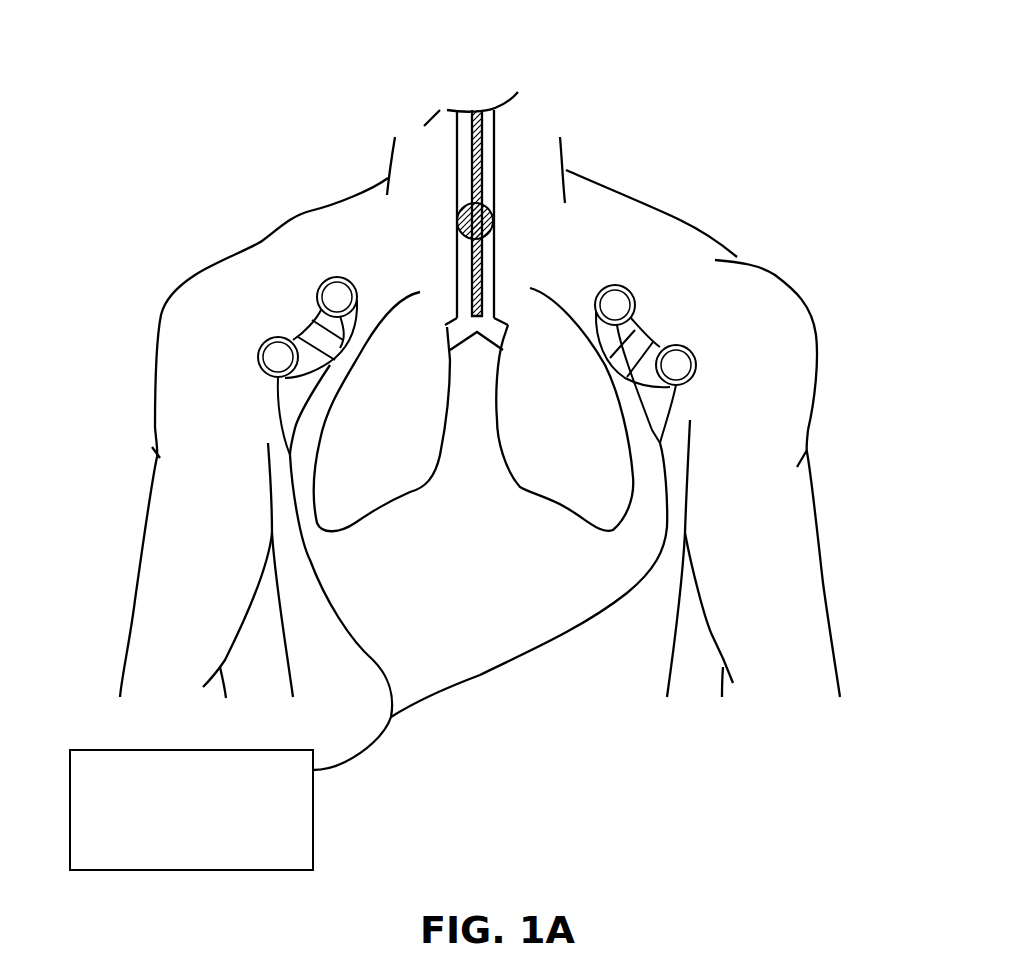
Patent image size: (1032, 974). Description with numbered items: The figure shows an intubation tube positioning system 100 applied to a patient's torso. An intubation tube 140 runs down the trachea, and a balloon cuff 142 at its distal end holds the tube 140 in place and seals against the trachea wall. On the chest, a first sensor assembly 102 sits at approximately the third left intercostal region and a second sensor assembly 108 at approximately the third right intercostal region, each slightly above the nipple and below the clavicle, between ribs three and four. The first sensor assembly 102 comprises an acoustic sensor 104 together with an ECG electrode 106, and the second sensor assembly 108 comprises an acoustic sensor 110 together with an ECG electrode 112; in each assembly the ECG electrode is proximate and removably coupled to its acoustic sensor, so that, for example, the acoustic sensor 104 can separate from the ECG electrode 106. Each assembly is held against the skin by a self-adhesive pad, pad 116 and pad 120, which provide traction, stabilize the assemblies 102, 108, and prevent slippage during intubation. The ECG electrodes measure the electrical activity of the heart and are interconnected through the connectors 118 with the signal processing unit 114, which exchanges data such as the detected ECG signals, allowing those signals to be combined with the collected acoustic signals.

The intubation tube positioning system 100 is at (800, 143).
The first sensor assembly 102 is at (615, 285).
The acoustic sensor 104 is at (636, 305).
The ECG electrode 106 is at (665, 345).
The second sensor assembly 108 is at (336, 277).
The acoustic sensor 110 is at (317, 297).
The ECG electrode 112 is at (262, 345).
The signal processing unit 114 is at (313, 838).
The self-adhesive pad 116 is at (680, 390).
The connectors 118 is at (367, 657).
The self-adhesive pad 120 is at (270, 378).
The intubation tube 140 is at (447, 110).
The balloon cuff 142 is at (491, 233).